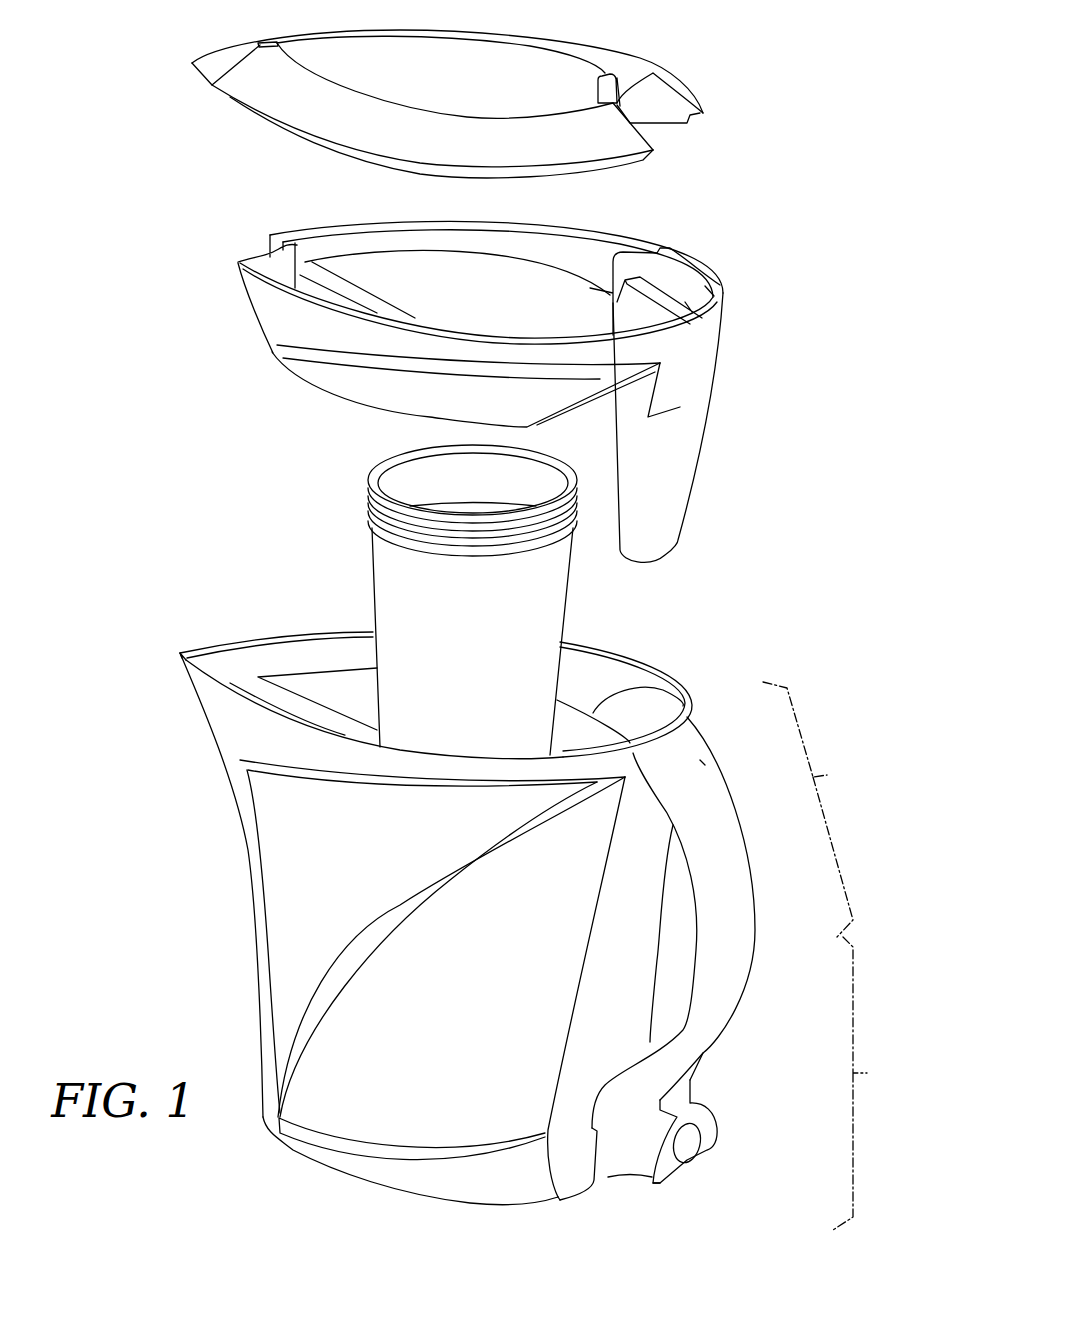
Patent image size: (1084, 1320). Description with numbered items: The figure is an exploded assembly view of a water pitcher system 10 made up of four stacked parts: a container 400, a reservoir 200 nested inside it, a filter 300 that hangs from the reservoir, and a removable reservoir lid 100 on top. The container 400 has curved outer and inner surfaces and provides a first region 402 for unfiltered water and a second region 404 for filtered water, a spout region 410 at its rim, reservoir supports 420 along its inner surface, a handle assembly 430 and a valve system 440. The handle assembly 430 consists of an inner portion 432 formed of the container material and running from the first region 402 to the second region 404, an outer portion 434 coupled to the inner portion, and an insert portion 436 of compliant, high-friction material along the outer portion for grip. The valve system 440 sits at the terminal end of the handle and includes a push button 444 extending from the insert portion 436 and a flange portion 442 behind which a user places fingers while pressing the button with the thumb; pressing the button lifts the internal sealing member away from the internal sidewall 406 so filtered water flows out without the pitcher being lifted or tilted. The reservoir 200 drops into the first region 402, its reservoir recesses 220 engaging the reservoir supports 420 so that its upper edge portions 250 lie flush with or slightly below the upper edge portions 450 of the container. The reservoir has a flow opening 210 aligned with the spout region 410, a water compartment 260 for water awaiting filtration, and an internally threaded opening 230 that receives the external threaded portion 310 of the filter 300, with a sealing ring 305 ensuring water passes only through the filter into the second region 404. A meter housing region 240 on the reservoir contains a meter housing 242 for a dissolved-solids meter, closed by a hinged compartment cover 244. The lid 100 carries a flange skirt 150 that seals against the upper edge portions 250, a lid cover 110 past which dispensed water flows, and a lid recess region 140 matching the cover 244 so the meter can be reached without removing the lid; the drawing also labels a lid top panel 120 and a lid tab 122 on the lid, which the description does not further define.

The system 10 is at (837, 98).
The reservoir lid 100 is at (446, 101).
The lid cover 110 is at (208, 62).
The lid top panel 120 is at (527, 67).
The lid tab 122 is at (607, 88).
The lid recess region 140 is at (663, 93).
The flange skirt 150 is at (627, 167).
The reservoir 200 is at (489, 369).
The flow opening 210 is at (256, 246).
The reservoir recesses 220 is at (352, 363).
The internally threaded opening 230 is at (356, 412).
The meter housing region 240 is at (711, 399).
The meter housing 242 is at (683, 472).
The compartment cover 244 is at (690, 292).
The upper edge portions 250 is at (363, 223).
The water compartment 260 is at (458, 273).
The filter 300 is at (410, 600).
The sealing ring 305 is at (367, 527).
The external threaded portion 310 is at (367, 495).
The container 400 is at (498, 912).
The first region 402 is at (820, 809).
The second region 404 is at (874, 1083).
The internal sidewall 406 is at (580, 1143).
The spout region 410 is at (180, 654).
The reservoir supports 420 is at (413, 787).
The handle assembly 430 is at (680, 957).
The inner portion 432 is at (687, 1008).
The outer portion 434 is at (703, 1055).
The insert portion 436 is at (712, 770).
The valve system 440 is at (745, 1146).
The flange portion 442 is at (655, 1190).
The push button 444 is at (695, 1143).
The upper edge portions 450 is at (293, 638).